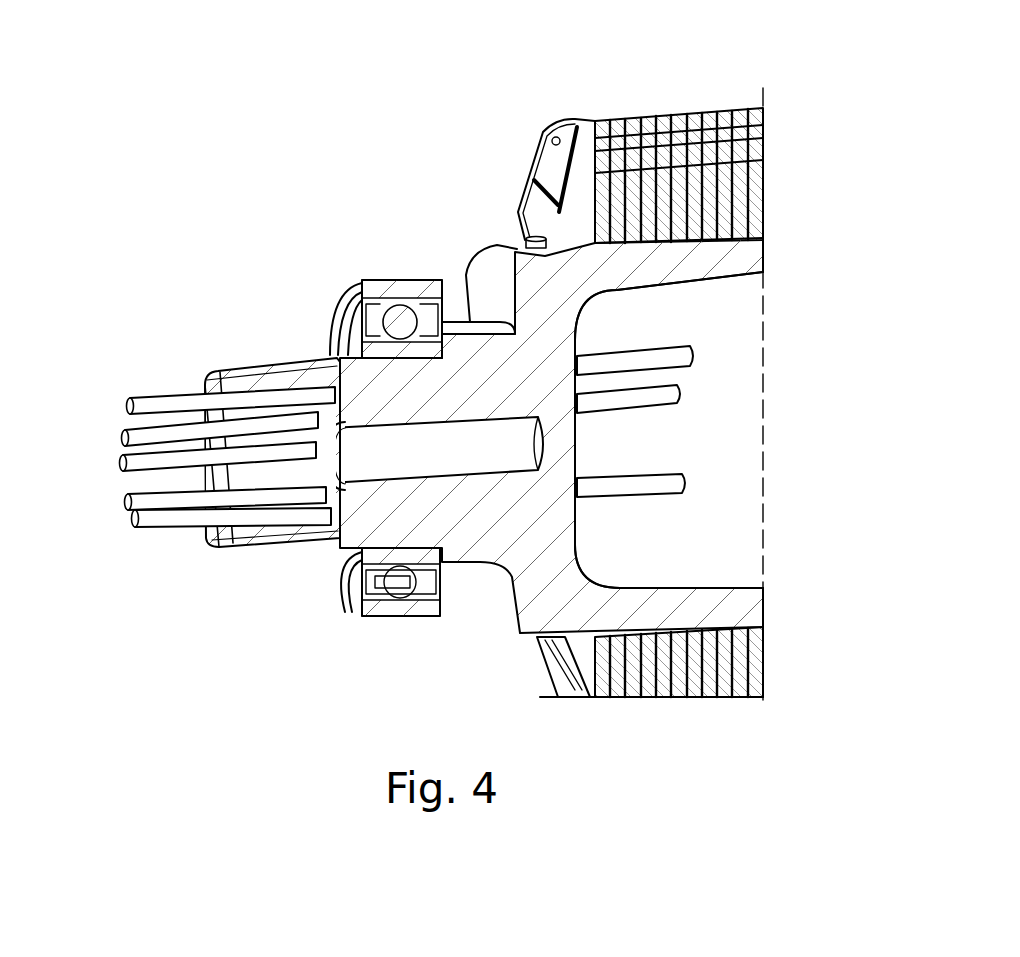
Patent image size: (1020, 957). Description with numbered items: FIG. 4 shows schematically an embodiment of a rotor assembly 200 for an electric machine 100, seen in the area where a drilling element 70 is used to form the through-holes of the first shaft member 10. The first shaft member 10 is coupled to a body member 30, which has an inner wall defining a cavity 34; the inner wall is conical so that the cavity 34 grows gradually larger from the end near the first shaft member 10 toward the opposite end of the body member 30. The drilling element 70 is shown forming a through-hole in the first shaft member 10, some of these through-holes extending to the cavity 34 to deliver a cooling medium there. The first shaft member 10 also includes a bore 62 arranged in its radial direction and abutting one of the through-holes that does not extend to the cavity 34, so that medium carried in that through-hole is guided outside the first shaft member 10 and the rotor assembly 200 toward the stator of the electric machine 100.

The first shaft member 10 is at (268, 542).
The body member 30 is at (733, 606).
The cavity 34 is at (733, 530).
The bore 62 is at (517, 240).
The drilling element 70 is at (126, 462).
The electric machine 100 is at (208, 200).
The rotor assembly 200 is at (848, 95).